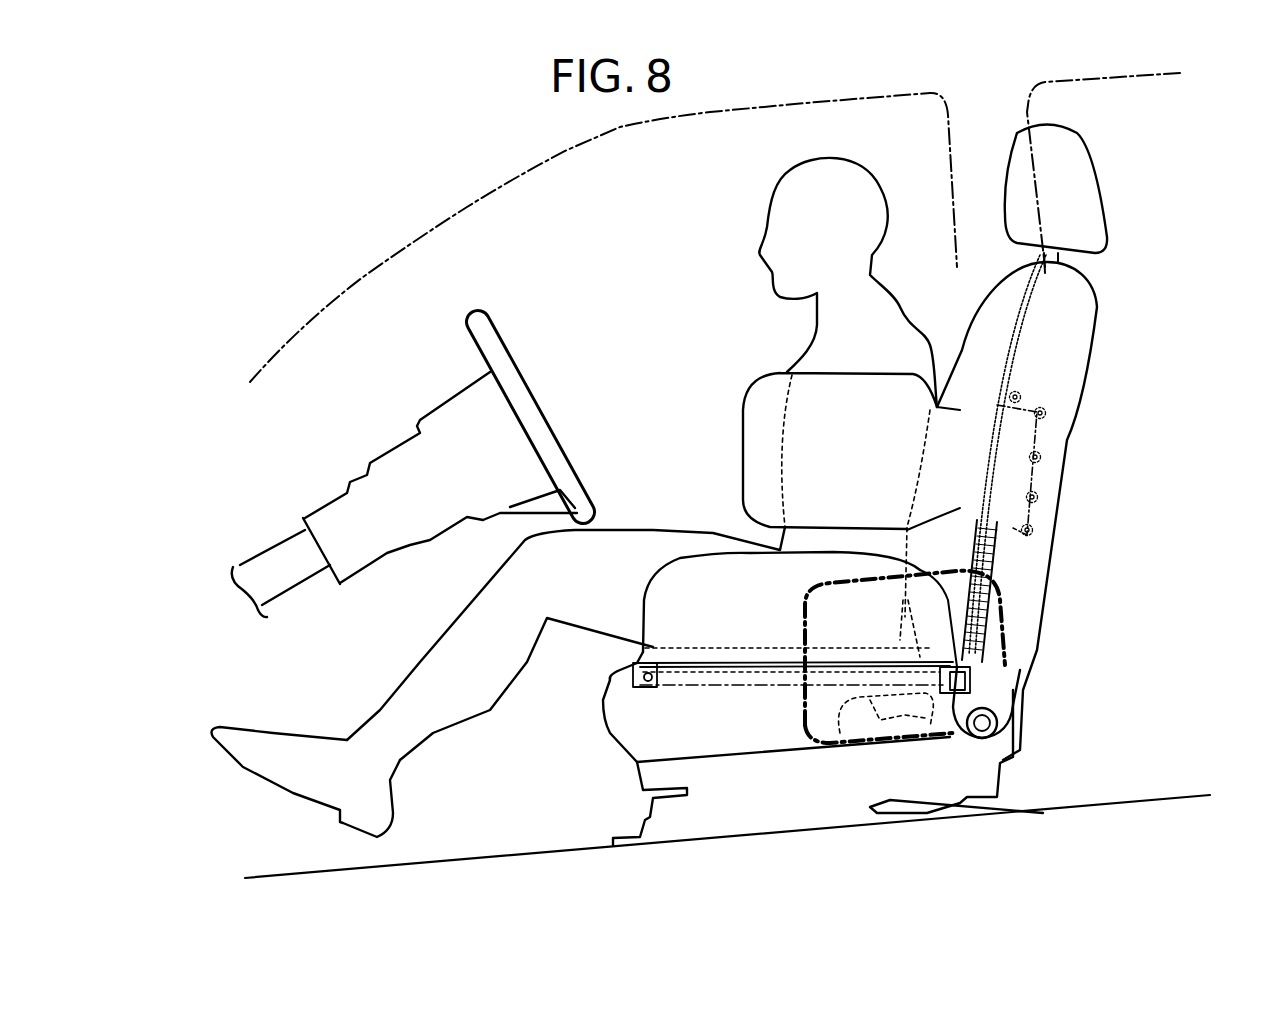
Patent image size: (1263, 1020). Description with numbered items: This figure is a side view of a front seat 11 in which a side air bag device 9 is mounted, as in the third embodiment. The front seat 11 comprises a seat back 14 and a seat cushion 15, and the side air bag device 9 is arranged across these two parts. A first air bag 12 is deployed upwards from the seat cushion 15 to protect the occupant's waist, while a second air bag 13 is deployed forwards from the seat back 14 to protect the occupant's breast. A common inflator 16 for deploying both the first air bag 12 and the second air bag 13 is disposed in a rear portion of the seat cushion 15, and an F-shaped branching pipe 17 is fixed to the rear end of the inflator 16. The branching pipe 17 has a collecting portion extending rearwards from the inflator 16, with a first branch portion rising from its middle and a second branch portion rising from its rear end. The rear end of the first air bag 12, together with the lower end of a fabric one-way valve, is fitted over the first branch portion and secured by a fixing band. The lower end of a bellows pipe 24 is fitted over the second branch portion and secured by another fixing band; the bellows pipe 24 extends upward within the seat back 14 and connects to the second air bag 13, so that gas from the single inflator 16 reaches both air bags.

The airbag device 9 is at (1015, 656).
The front seat 11 is at (1090, 482).
The first air bag 12 is at (697, 582).
The second air bag 13 is at (765, 395).
The seat back 14 is at (1060, 340).
The seat cushion 15 is at (615, 727).
The inflator 16 is at (867, 747).
The branching pipe 17 is at (953, 743).
The bellows pipe 24 is at (1003, 557).